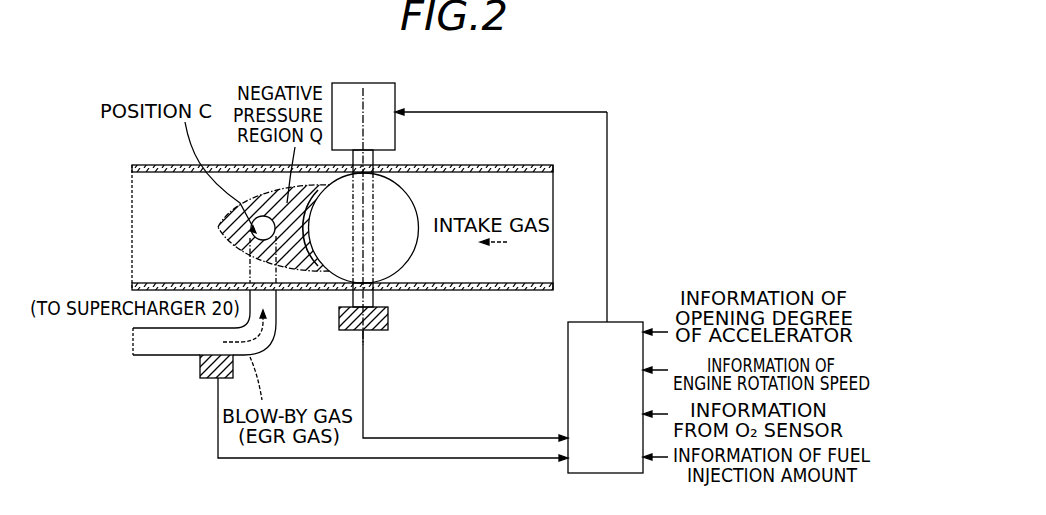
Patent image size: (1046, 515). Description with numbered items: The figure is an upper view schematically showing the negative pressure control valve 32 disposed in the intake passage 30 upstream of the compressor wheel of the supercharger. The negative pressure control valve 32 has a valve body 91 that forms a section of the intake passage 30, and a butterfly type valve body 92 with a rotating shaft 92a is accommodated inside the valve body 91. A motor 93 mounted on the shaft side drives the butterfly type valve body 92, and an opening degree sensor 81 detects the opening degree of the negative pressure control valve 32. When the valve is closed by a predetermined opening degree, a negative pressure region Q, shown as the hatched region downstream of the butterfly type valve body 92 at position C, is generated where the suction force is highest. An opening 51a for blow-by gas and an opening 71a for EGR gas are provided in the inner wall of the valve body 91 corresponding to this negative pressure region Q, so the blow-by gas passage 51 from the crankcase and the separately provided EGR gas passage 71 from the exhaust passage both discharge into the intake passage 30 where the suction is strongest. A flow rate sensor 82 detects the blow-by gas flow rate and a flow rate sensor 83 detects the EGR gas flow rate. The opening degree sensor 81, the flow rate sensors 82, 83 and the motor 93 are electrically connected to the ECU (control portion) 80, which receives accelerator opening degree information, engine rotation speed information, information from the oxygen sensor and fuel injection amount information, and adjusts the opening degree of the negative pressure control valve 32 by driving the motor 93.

The intake passage 30 is at (342, 202).
The valve body 91 is at (492, 165).
The negative pressure control valve 32 is at (590, 240).
The motor 93 is at (387, 83).
The rotating shaft 92a is at (375, 158).
The butterfly type valve body 92 is at (407, 210).
The opening degree sensor 81 is at (390, 323).
The opening 51a is at (236, 169).
The opening 71a is at (257, 222).
The blow-by gas passage 51 is at (239, 329).
The EGR gas passage 71 is at (266, 338).
The flow rate sensor 82 is at (338, 408).
The flow rate sensor 83 is at (200, 368).
The ECU (control portion) 80 is at (628, 320).